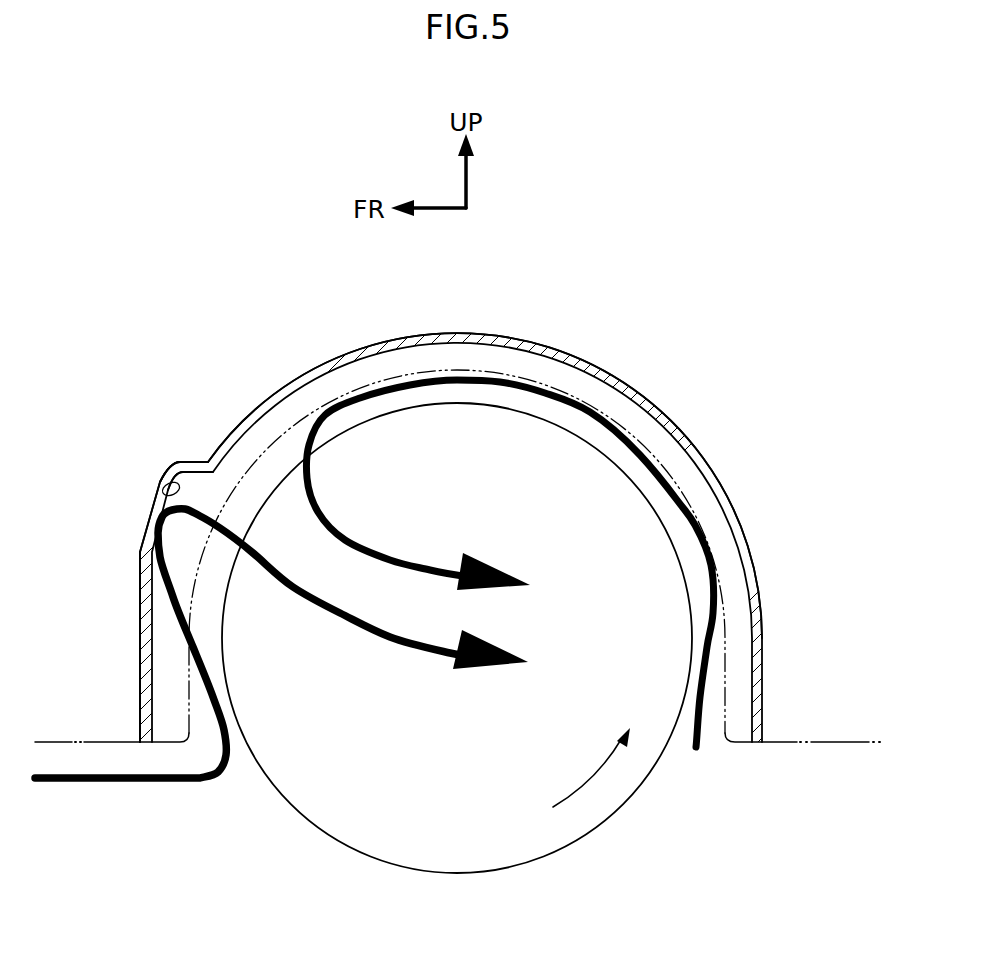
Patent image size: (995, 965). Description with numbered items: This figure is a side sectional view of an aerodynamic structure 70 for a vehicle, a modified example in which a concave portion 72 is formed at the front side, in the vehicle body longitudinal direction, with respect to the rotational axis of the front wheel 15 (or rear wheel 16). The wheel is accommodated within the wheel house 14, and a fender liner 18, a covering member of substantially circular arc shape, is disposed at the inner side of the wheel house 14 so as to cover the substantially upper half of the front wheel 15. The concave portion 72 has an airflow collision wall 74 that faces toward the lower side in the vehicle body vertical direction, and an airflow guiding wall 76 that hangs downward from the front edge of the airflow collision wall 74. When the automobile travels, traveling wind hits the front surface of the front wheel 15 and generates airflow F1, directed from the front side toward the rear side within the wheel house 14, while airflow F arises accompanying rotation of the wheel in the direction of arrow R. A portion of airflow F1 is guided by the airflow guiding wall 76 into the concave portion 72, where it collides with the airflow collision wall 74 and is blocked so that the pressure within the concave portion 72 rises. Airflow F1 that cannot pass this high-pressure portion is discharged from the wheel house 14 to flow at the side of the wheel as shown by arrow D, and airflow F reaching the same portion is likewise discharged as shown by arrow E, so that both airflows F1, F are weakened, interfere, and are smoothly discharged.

The wheel house 14 is at (675, 458).
The fender liner 18 is at (474, 328).
The aerodynamic structure for a vehicle 70 is at (650, 325).
The concave portion 72 is at (176, 488).
The airflow collision wall 74 is at (186, 461).
The airflow guiding wall 76 is at (146, 530).
The front wheel 15 is at (457, 666).
The rear wheel 16 is at (572, 839).
The airflow F is at (707, 638).
The airflow F1 is at (218, 713).
The arrow E is at (503, 577).
The arrow D is at (501, 654).
The arrow R is at (597, 755).